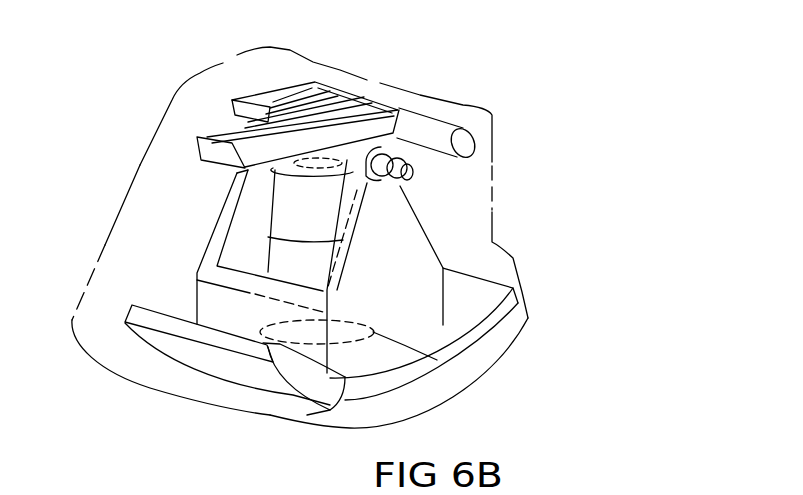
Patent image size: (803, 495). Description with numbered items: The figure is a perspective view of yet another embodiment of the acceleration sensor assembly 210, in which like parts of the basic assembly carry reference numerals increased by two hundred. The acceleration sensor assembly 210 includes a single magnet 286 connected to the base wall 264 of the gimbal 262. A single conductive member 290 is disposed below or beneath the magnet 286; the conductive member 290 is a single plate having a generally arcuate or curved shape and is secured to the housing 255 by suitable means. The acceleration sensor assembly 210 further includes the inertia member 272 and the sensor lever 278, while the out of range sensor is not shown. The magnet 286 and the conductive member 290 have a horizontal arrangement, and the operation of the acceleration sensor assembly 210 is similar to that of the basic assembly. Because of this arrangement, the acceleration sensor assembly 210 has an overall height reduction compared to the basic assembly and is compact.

The acceleration sensor assembly 210 is at (395, 65).
The housing 255 is at (493, 163).
The gimbal 262 is at (400, 253).
The base wall 264 is at (303, 416).
The inertia member 272 is at (262, 217).
The sensor lever 278 is at (230, 137).
The magnet 286 is at (430, 357).
The conductive member 290 is at (177, 347).